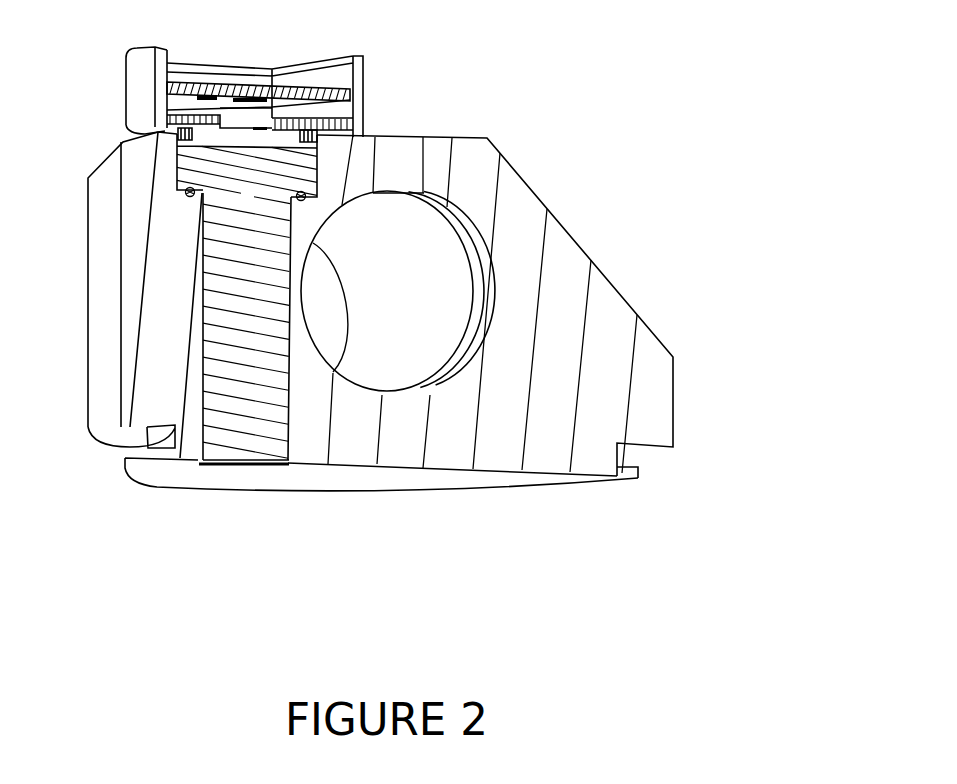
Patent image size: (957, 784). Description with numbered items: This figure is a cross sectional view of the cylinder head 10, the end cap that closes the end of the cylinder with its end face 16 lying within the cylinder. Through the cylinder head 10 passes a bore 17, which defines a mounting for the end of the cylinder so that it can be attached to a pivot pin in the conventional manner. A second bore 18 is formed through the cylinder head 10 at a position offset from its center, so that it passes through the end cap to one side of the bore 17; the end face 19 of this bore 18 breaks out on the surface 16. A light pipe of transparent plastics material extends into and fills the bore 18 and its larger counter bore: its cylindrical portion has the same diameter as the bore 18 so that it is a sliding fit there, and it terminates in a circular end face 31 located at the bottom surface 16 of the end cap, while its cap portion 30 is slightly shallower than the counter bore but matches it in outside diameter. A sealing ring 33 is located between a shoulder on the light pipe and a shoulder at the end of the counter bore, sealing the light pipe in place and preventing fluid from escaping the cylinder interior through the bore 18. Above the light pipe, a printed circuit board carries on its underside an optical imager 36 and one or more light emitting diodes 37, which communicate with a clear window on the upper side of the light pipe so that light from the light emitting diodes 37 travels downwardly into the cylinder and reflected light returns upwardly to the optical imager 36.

The cylinder head 10 is at (632, 281).
The end face 16 is at (331, 490).
The bore 17 is at (453, 296).
The bore 18 is at (192, 367).
The end face 19 is at (242, 481).
The cap portion 30 is at (334, 159).
The end face 31 is at (201, 479).
The sealing ring 33 is at (178, 209).
The optical imager 36 is at (222, 114).
The light emitting diode 37 is at (183, 103).